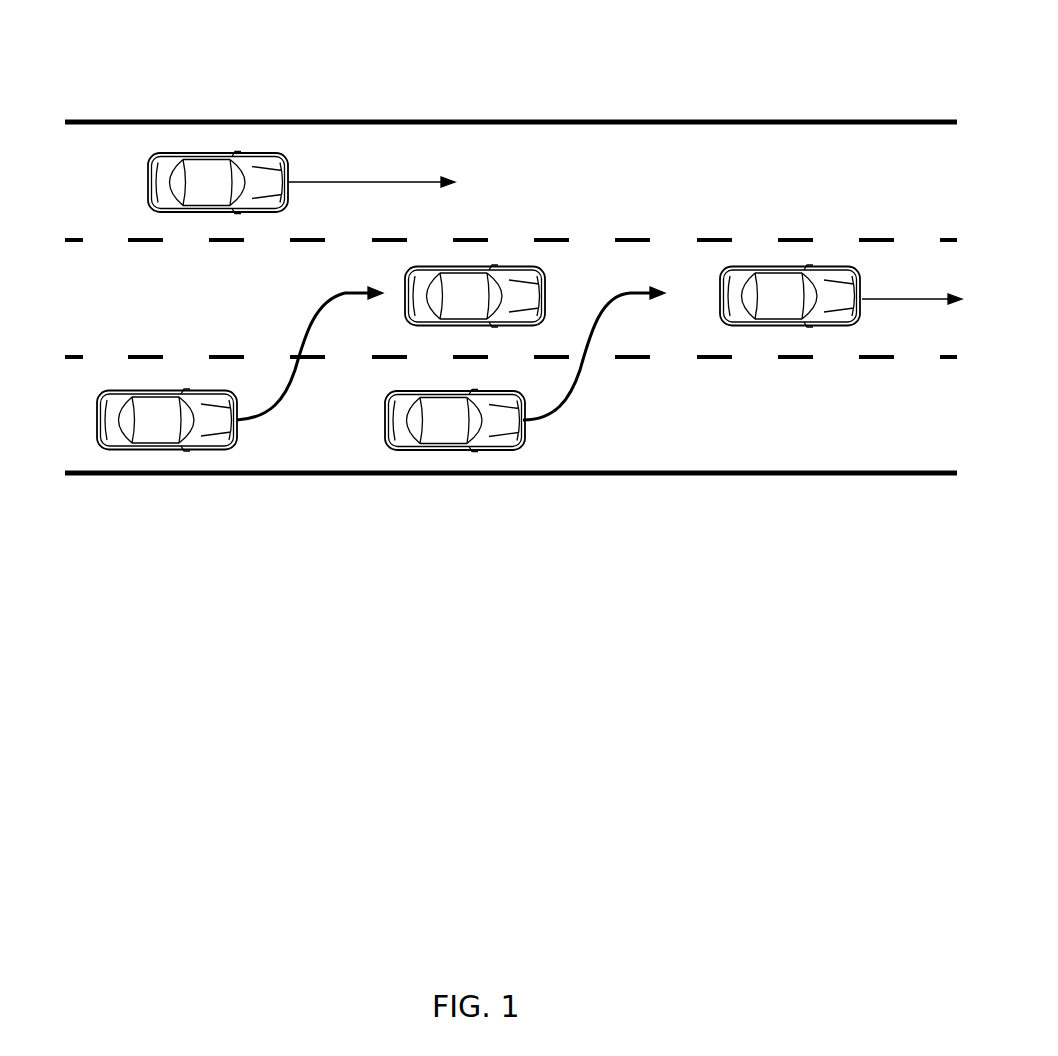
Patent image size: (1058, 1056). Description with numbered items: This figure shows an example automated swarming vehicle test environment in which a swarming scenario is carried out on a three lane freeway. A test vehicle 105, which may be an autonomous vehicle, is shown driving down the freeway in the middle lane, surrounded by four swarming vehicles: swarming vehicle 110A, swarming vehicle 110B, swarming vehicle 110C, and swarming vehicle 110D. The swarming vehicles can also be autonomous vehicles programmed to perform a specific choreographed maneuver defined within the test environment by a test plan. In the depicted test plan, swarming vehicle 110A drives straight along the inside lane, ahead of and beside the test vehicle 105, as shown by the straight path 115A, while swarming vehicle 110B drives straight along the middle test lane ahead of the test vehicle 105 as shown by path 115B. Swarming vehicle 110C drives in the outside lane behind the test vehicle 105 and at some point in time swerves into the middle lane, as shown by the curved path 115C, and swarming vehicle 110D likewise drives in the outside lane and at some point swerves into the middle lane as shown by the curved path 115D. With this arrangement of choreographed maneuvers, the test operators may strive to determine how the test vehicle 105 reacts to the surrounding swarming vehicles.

The test vehicle 105 is at (470, 290).
The swarming vehicle 110A is at (257, 168).
The swarming vehicle 110B is at (782, 280).
The swarming vehicle 110C is at (167, 428).
The swarming vehicle 110D is at (445, 425).
The path 115A is at (385, 182).
The path 115B is at (900, 298).
The path 115C is at (278, 407).
The path 115D is at (577, 393).